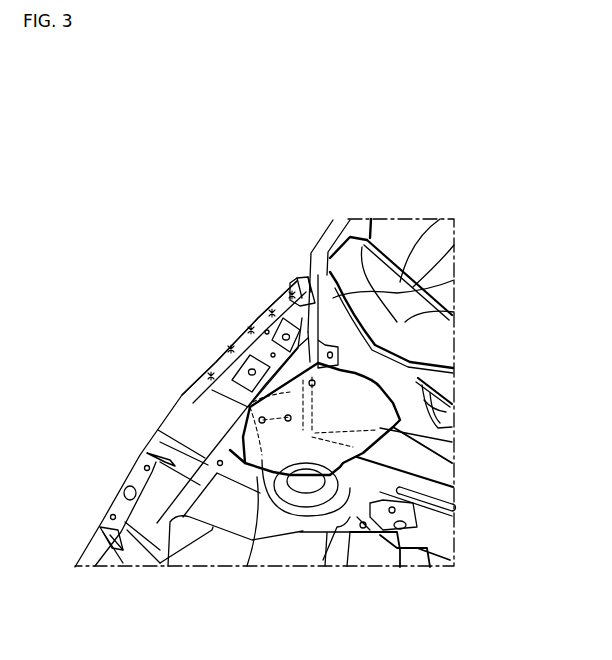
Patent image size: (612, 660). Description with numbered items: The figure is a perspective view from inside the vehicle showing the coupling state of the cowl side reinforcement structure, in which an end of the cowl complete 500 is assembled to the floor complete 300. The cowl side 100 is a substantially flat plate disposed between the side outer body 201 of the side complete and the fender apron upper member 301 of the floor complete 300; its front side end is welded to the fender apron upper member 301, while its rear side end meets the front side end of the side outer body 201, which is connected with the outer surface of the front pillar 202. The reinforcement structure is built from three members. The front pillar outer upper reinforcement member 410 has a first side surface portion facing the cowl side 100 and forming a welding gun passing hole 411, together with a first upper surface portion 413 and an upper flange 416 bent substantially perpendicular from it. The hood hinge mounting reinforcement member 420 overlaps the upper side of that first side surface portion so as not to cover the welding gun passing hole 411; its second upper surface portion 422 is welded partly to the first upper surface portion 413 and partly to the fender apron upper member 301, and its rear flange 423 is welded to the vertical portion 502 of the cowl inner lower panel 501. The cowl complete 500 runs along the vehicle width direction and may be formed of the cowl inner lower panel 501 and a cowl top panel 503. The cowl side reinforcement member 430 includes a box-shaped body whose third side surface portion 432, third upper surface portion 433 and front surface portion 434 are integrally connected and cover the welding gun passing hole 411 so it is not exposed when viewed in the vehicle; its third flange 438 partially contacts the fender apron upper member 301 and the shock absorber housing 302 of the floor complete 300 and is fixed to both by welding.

The cowl side 100 is at (293, 278).
The side outer body 201 is at (305, 260).
The front pillar 202 is at (334, 222).
The floor complete 300 is at (98, 494).
The fender apron upper member 301 is at (187, 425).
The shock absorber housing 302 is at (145, 452).
The front pillar outer upper reinforcement member 410 is at (316, 297).
The welding gun passing hole 411 is at (300, 480).
The first upper surface portion 413 is at (281, 307).
The upper flange 416 is at (238, 340).
The hood hinge mounting reinforcement member 420 is at (250, 323).
The second upper surface portion 422 is at (209, 374).
The rear flange 423 is at (420, 293).
The cowl side reinforcement member 430 is at (352, 460).
The third side surface portion 432 is at (443, 440).
The third upper surface portion 433 is at (452, 318).
The front surface portion 434 is at (247, 566).
The third flange 438 is at (213, 503).
The cowl complete 500 is at (456, 372).
The cowl inner lower panel 501 is at (445, 472).
The vertical portion 502 is at (424, 395).
The cowl top panel 503 is at (407, 344).